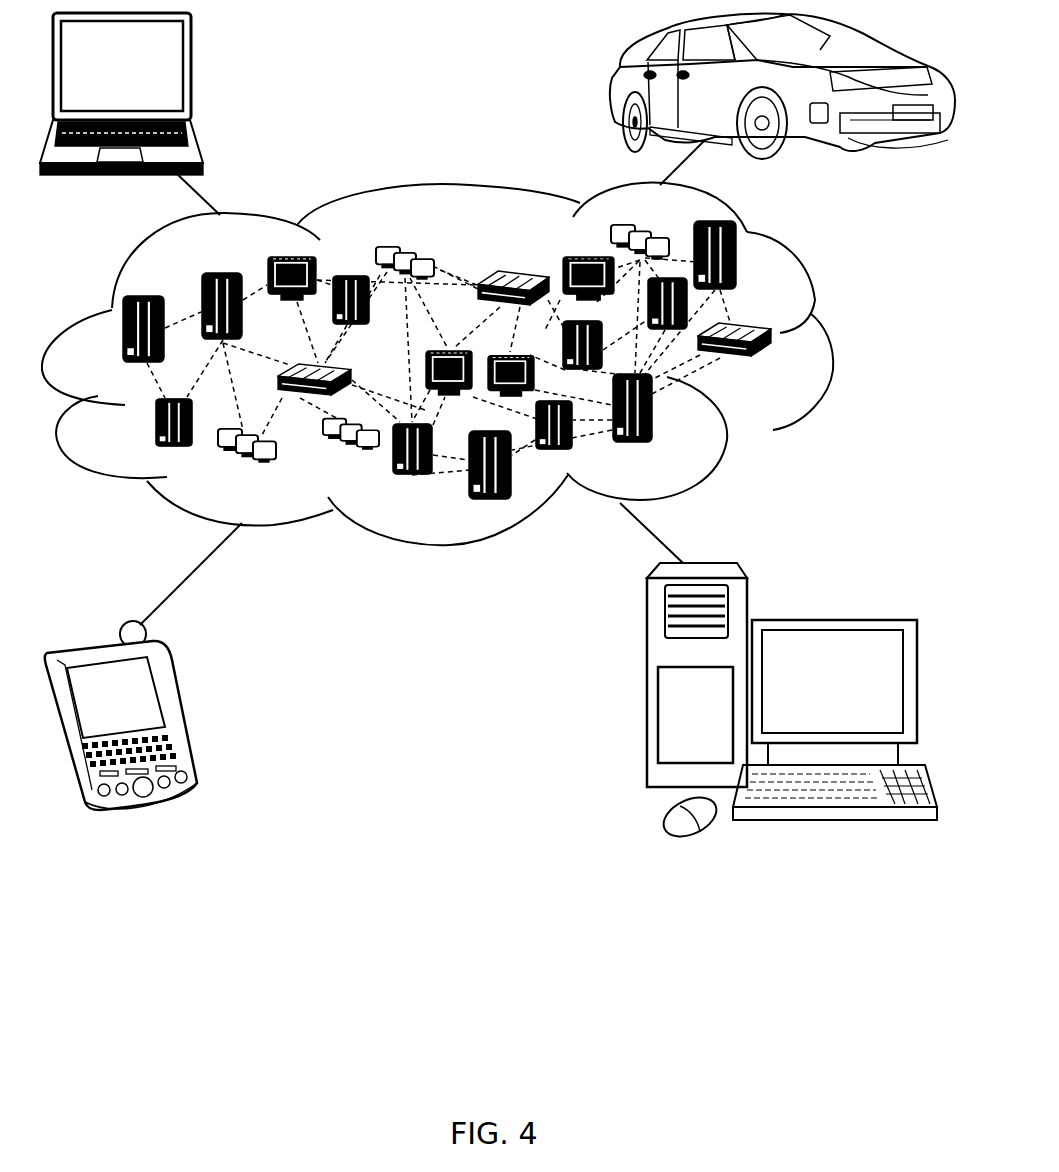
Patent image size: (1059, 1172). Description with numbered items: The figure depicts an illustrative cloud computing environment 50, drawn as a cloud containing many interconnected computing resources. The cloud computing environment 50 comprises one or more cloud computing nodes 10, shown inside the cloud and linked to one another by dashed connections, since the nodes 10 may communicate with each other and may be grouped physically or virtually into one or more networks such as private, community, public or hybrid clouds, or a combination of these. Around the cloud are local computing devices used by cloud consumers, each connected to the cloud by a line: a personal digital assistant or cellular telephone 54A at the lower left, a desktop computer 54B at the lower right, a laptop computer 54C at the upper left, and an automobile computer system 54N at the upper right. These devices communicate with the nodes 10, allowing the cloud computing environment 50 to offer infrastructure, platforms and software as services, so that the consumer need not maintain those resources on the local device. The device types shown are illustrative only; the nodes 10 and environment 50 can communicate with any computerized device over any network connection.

The laptop computer 54C is at (191, 72).
The automobile computer system 54N is at (613, 90).
The cloud computing environment 50 is at (832, 337).
The cloud computing node 10 is at (780, 370).
The personal digital assistant or cellular telephone 54A is at (180, 710).
The desktop computer 54B is at (832, 617).